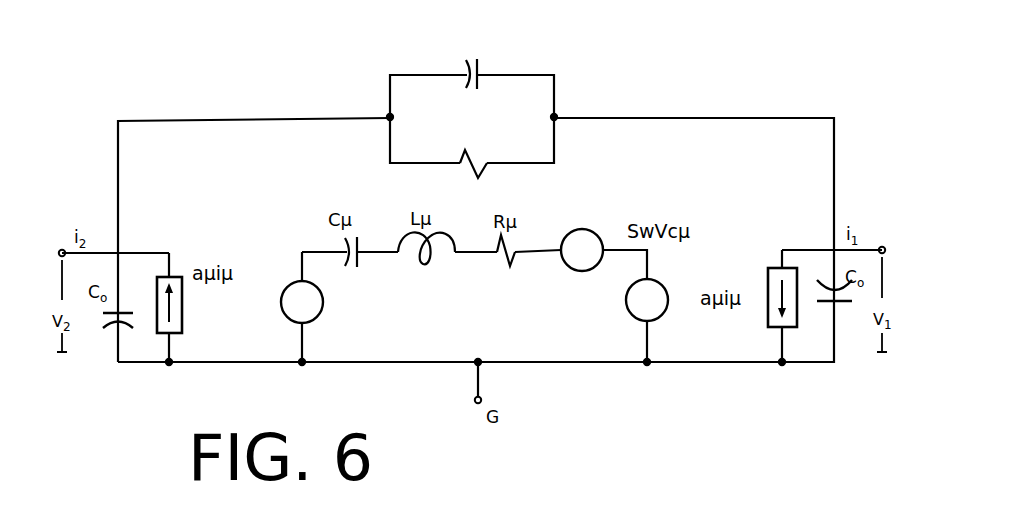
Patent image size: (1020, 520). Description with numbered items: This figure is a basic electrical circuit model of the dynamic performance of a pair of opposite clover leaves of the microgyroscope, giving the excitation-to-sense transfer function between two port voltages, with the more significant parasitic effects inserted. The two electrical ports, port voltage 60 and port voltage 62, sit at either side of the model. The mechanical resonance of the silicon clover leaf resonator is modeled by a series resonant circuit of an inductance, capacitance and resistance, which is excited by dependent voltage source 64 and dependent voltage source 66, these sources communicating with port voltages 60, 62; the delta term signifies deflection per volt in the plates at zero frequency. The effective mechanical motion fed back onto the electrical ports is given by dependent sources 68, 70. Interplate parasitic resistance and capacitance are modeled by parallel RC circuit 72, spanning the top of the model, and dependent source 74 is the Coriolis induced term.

The port voltage 60 is at (59, 250).
The port voltage 62 is at (882, 247).
The dependent voltage source 64 is at (321, 306).
The dependent voltage source 66 is at (628, 314).
The dependent source 68 is at (160, 330).
The dependent source 70 is at (792, 328).
The parallel RC circuit 72 is at (515, 162).
The dependent source 74 is at (590, 229).